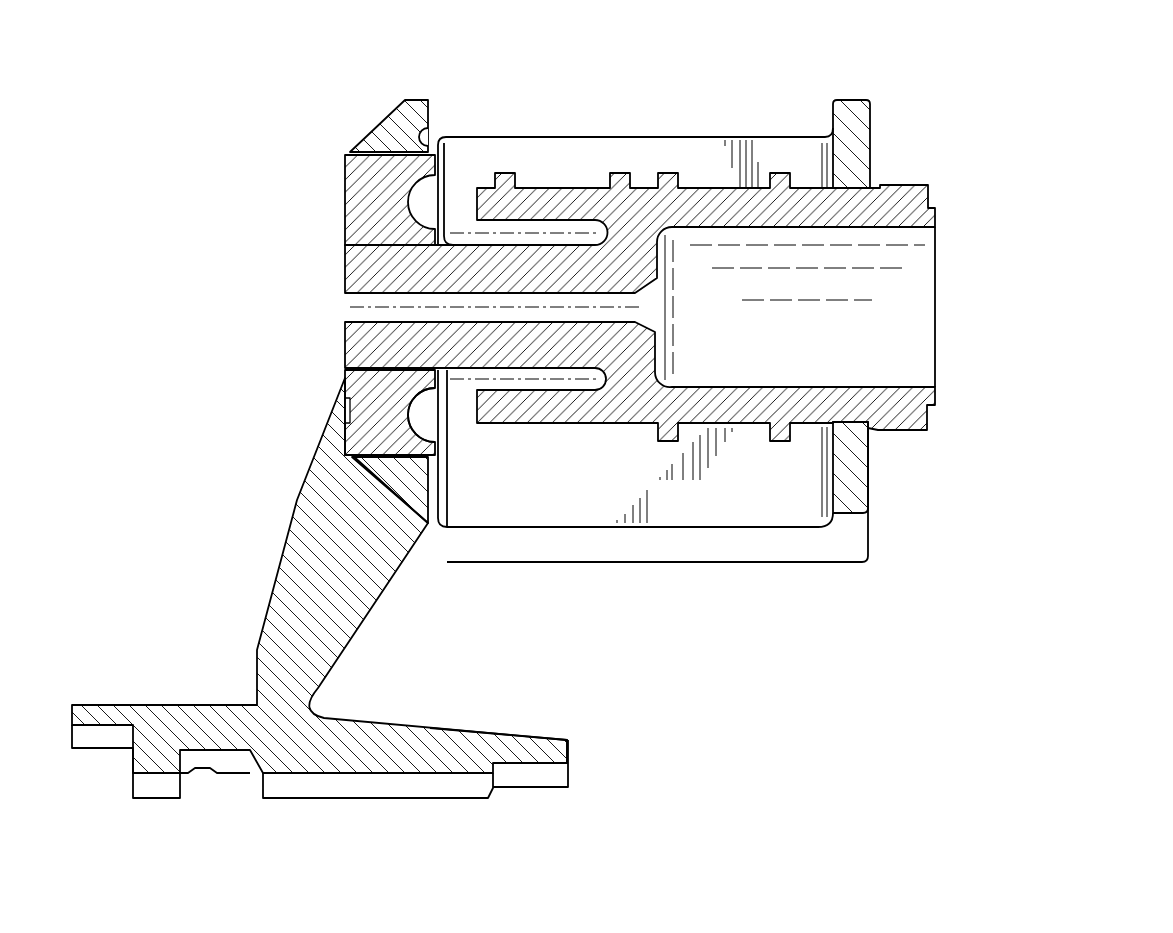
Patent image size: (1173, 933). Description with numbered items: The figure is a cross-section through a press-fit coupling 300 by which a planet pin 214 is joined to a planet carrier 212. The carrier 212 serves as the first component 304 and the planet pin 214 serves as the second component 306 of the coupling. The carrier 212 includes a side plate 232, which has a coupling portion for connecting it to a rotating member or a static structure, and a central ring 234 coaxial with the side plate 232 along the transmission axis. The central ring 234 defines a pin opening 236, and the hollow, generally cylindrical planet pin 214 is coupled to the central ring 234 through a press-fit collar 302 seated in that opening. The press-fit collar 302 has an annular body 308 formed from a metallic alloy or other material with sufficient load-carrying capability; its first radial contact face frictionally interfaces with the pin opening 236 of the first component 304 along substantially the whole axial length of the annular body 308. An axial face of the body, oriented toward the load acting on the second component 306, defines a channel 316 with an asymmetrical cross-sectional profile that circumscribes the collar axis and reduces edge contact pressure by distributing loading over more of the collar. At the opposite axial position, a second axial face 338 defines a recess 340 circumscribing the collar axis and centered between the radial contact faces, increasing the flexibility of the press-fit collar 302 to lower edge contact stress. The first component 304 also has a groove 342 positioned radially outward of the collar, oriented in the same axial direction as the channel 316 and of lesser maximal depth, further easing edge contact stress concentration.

The press-fit coupling 300 is at (255, 193).
The pin opening 236 is at (193, 168).
The press-fit collar 302 is at (585, 313).
The recess 340 is at (345, 205).
The second axial face 338 is at (343, 433).
The channel 316 is at (428, 427).
The annular body 308 is at (369, 263).
The central ring 234 is at (435, 77).
The groove 342 is at (414, 137).
The planet pin 214 is at (706, 321).
The second component 306 is at (898, 196).
The planet carrier 212 is at (357, 588).
The first component 304 is at (328, 605).
The side plate 232 is at (552, 748).